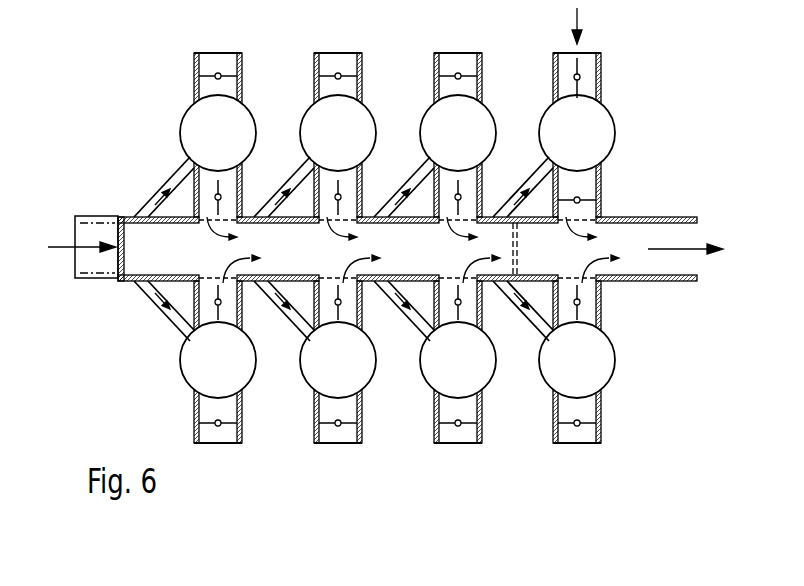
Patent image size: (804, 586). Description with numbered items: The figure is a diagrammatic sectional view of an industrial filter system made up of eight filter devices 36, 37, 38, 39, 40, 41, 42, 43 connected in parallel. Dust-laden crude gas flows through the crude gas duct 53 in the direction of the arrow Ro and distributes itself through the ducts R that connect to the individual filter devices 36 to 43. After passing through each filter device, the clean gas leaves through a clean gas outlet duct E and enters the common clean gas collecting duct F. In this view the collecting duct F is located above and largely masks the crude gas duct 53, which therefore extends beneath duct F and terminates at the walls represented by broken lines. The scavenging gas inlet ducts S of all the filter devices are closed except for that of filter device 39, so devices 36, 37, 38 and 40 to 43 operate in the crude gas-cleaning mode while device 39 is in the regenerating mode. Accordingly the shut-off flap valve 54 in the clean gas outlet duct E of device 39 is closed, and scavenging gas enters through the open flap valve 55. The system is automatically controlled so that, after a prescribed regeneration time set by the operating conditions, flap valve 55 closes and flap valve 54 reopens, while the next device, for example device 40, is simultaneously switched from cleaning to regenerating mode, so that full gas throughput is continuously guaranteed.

The filter device 36 is at (230, 146).
The filter device 37 is at (350, 146).
The filter device 38 is at (470, 146).
The filter device 39 is at (589, 146).
The filter device 40 is at (230, 373).
The filter device 41 is at (350, 373).
The filter device 42 is at (470, 373).
The filter device 43 is at (589, 373).
The crude gas duct 53 is at (96, 215).
The shut-off flap valve 54 is at (597, 196).
The flap valve 55 is at (582, 65).
The scavenging gas inlet duct S is at (212, 60).
The duct R is at (158, 184).
The clean gas outlet duct E is at (194, 190).
The clean gas collecting duct F is at (172, 261).
The arrow Ro is at (62, 250).